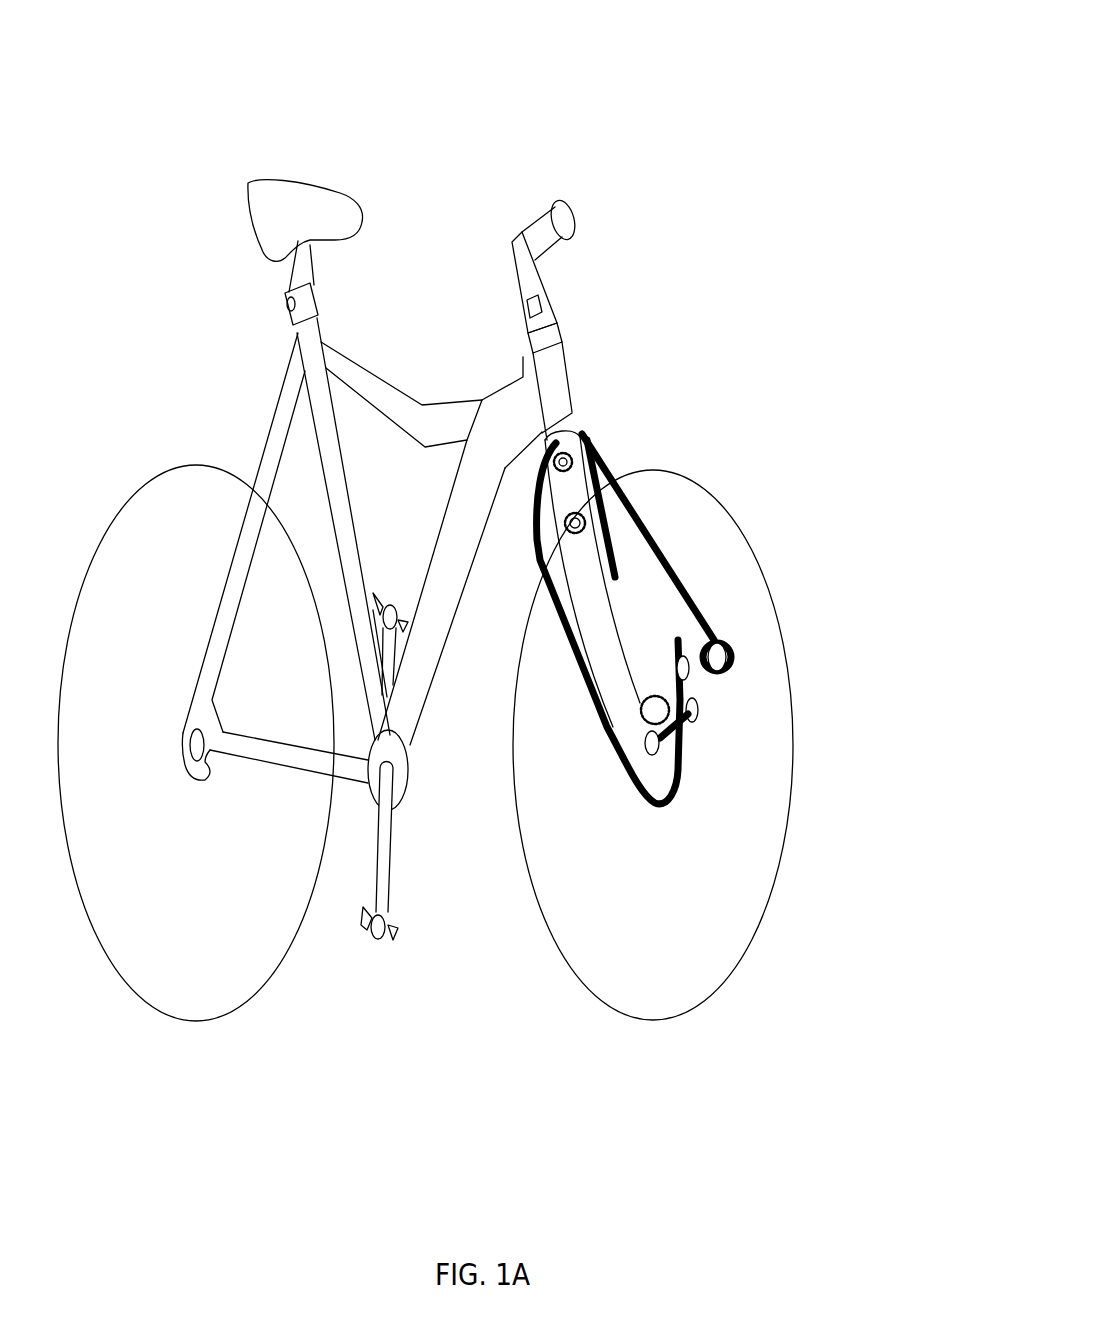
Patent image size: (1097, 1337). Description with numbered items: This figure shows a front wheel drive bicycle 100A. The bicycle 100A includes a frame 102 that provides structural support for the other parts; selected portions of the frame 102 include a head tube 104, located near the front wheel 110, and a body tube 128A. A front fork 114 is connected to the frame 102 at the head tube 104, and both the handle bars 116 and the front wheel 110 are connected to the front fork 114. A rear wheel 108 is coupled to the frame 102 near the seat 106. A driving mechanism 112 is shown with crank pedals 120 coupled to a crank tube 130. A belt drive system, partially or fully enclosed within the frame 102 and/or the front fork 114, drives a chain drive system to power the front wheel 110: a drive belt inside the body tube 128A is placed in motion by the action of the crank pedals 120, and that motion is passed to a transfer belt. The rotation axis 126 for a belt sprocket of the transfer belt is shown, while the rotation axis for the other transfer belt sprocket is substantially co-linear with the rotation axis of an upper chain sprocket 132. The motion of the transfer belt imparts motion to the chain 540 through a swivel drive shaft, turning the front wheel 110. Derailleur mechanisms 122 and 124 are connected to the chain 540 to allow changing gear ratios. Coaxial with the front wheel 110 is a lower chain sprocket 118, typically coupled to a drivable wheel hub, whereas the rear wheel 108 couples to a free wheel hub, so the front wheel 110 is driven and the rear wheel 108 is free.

The bicycle 100A is at (656, 70).
The frame 102 is at (372, 365).
The head tube 104 is at (566, 352).
The seat 106 is at (305, 183).
The rear wheel 108 is at (158, 477).
The front wheel 110 is at (733, 513).
The driving mechanism 112 is at (410, 810).
The front fork 114 is at (613, 660).
The handle bars 116 is at (560, 212).
The lower chain sprocket 118 is at (678, 776).
The crank pedals 120 is at (392, 945).
The derailleur mechanism 122 is at (723, 687).
The derailleur mechanism 124 is at (603, 446).
The rotation axis 126 is at (576, 412).
The body tube 128A is at (456, 636).
The crank tube 130 is at (408, 750).
The upper chain sprocket 132 is at (620, 473).
The chain 540 is at (707, 603).